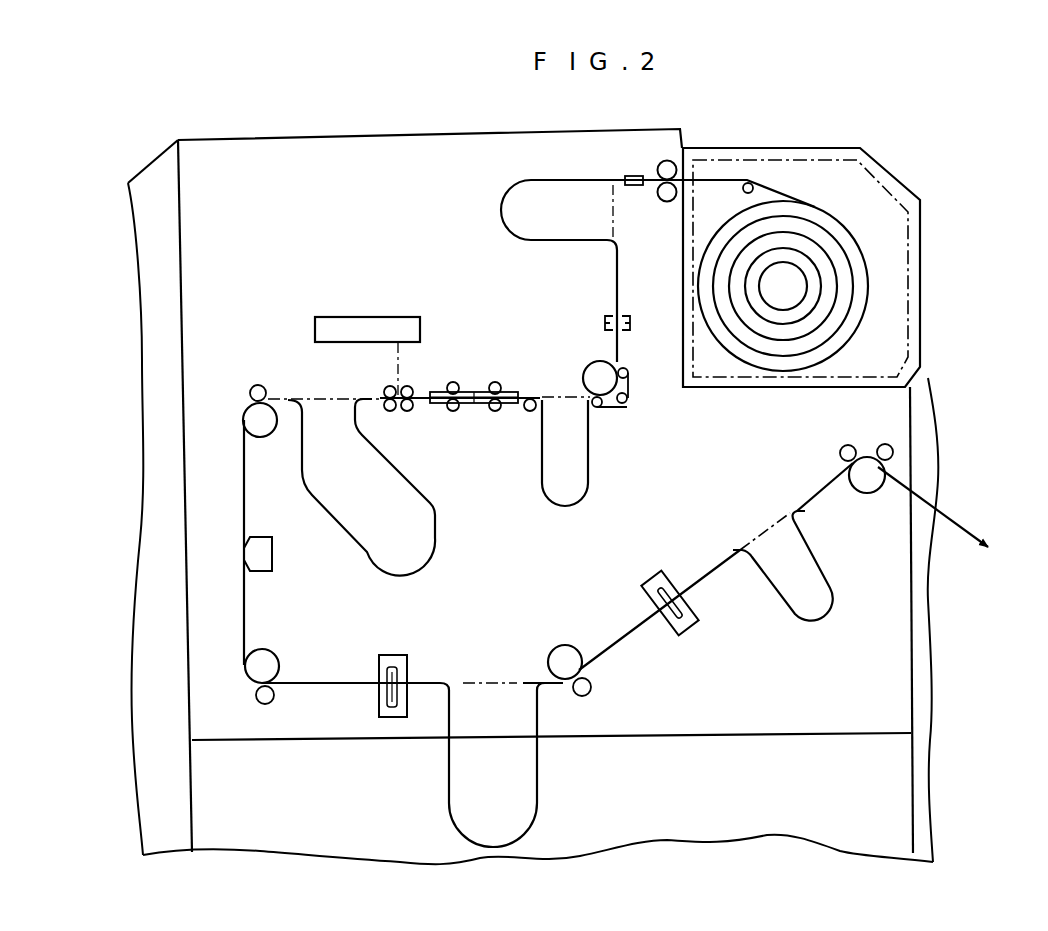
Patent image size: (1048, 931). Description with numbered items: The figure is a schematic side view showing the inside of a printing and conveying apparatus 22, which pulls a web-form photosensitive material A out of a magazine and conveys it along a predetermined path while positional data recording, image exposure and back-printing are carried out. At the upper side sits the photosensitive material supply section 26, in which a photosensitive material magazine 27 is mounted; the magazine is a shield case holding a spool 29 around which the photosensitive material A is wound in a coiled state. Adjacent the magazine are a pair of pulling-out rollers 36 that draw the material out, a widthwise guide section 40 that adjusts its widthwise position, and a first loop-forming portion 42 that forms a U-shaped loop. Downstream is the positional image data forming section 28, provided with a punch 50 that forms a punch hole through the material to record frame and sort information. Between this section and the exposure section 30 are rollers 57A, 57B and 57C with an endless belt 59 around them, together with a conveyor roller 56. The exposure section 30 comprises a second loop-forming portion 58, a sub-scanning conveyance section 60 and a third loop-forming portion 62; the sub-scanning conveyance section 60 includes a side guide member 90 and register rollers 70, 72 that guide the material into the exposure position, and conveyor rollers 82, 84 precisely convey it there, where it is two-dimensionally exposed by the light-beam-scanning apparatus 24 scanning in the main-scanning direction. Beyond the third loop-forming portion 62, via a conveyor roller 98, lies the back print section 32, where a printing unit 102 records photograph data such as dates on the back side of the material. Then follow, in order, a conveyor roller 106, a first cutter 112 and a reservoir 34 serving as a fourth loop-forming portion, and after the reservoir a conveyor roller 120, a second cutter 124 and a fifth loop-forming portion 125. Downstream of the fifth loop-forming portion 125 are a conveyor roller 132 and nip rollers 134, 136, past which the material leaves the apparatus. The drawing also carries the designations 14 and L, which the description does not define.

The printing and conveying apparatus 22 is at (333, 130).
The light-beam-scanning apparatus 24 is at (373, 317).
The photosensitive material supply section 26 is at (910, 188).
The photosensitive material magazine 27 is at (786, 160).
The positional image data forming section 28 is at (597, 297).
The spool 29 is at (798, 287).
The exposure section 30 is at (484, 360).
The back print section 32 is at (208, 663).
The reservoir 34 is at (588, 810).
The pulling-out rollers 36 is at (668, 160).
The widthwise guide section 40 is at (638, 176).
The first loop-forming portion 42 is at (560, 180).
The punch 50 is at (605, 323).
The conveyor roller 56 is at (594, 372).
The roller 57A is at (627, 371).
The roller 57B is at (628, 398).
The roller 57C is at (598, 408).
The second loop-forming portion 58 is at (543, 500).
The endless belt 59 is at (627, 404).
The sub-scanning conveyance section 60 is at (452, 410).
The third loop-forming portion 62 is at (440, 522).
The register roller 70 is at (496, 384).
The register roller 72 is at (450, 384).
The conveyor roller 82 is at (410, 411).
The conveyor roller 84 is at (390, 411).
The side guide member 90 is at (453, 388).
The conveyor roller 98 is at (262, 426).
The printing unit 102 is at (262, 549).
The conveyor roller 106 is at (279, 663).
The first cutter 112 is at (400, 660).
The conveyor roller 120 is at (568, 648).
The second cutter 124 is at (657, 577).
The fifth loop-forming portion 125 is at (807, 624).
The conveyor roller 132 is at (870, 482).
The nip roller 134 is at (843, 448).
The nip roller 136 is at (888, 446).
The discharge direction 14 is at (947, 524).
The photosensitive material A is at (720, 178).
The print line axis L is at (397, 360).